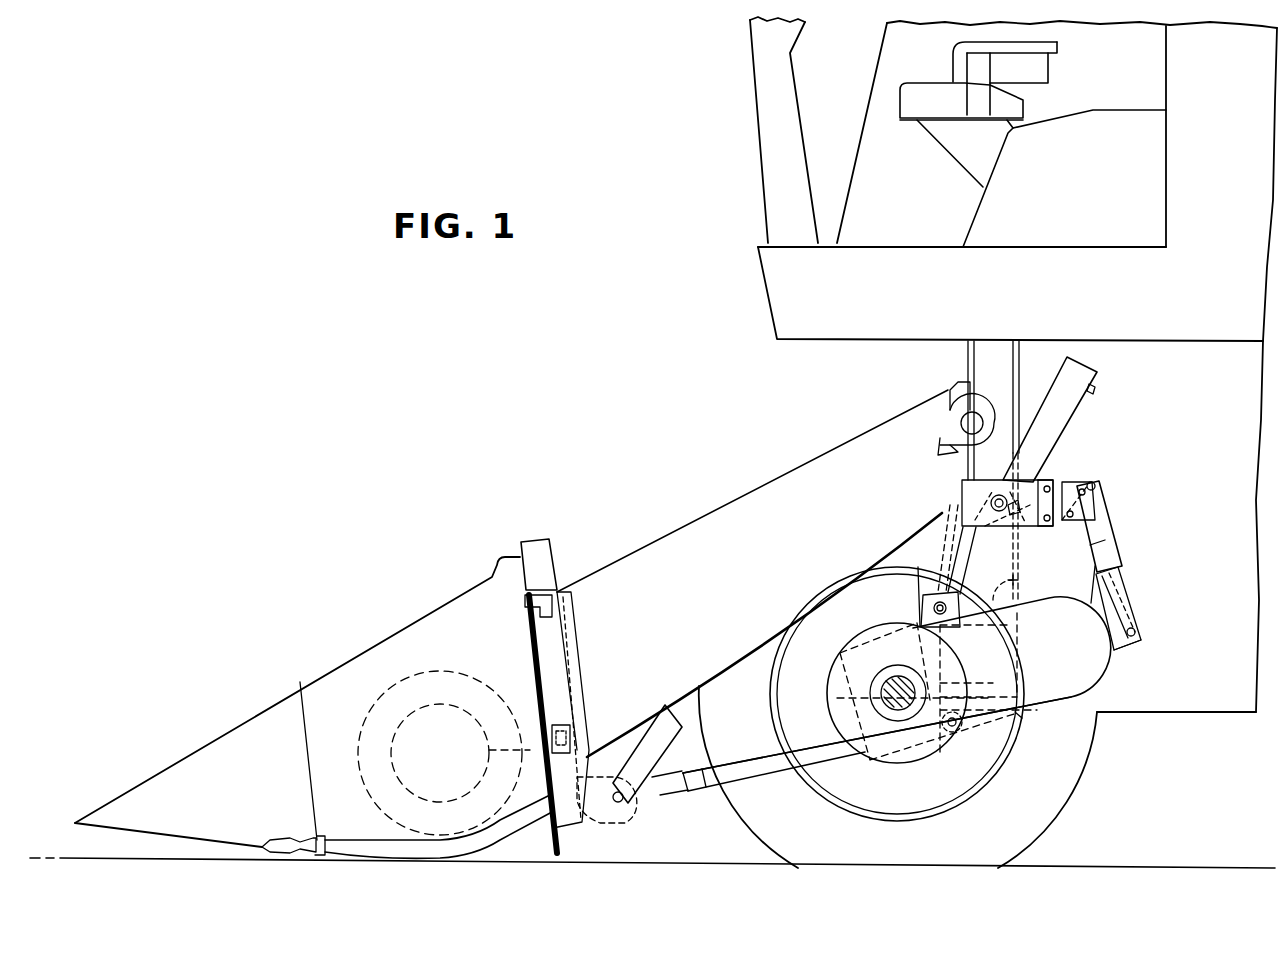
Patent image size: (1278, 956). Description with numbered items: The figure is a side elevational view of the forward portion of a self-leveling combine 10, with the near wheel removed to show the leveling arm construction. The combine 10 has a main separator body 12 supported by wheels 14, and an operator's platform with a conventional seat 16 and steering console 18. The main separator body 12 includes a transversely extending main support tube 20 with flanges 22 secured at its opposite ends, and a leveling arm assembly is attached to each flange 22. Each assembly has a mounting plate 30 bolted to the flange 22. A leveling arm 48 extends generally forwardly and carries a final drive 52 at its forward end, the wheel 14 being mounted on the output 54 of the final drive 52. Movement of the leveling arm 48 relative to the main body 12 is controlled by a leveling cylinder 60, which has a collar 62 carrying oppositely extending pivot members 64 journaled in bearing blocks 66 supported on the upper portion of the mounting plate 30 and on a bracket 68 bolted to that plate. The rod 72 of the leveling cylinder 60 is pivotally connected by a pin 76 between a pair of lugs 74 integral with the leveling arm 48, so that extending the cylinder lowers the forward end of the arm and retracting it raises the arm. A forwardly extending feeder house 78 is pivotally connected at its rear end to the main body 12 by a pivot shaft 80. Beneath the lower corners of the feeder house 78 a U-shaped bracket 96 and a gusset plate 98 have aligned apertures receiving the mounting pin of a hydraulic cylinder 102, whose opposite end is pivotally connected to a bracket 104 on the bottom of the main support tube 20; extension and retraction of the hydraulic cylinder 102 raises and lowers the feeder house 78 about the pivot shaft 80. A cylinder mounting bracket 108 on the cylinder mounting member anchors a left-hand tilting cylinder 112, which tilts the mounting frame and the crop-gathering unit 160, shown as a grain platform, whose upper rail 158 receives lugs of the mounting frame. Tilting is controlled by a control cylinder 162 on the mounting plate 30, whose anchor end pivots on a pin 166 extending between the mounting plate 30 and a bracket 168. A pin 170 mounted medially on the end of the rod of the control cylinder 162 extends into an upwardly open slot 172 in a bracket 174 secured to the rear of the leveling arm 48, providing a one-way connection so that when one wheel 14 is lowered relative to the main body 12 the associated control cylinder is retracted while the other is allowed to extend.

The combine 10 is at (758, 352).
The main separator body 12 is at (1035, 362).
The wheels 14 is at (1075, 772).
The seat 16 is at (920, 90).
The steering console 18 is at (785, 87).
The main transversely extending support tube 20 is at (1020, 717).
The flanges 22 is at (1013, 581).
The mounting plate 30 is at (1068, 548).
The leveling arm 48 is at (1112, 662).
The final drive 52 is at (872, 636).
The output of the final drive 54 is at (896, 680).
The leveling cylinder 60 is at (1067, 410).
The collar 62 is at (1007, 520).
The pivot members 64 is at (993, 494).
The bearing blocks 66 is at (1013, 492).
The bracket 68 is at (1040, 486).
The rod 72 is at (975, 547).
The lugs 74 is at (955, 598).
The pin 76 is at (930, 575).
The feeder house 78 is at (828, 468).
The pivot shaft 80 is at (975, 418).
The U-shaped bracket 96 is at (615, 824).
The gusset plate 98 is at (648, 758).
The hydraulic cylinders 102 is at (738, 763).
The brackets 104 is at (974, 718).
The cylinder mounting bracket 108 is at (570, 745).
The left-hand tilting cylinder 112 is at (550, 665).
The upper rail 158 is at (550, 542).
The crop-gathering unit 160 is at (388, 630).
The control cylinder 162 is at (1100, 521).
The pin 166 is at (1094, 487).
The bracket 168 is at (1070, 483).
The pin 170 is at (1135, 625).
The slot 172 is at (1118, 598).
The bracket 174 is at (1133, 645).